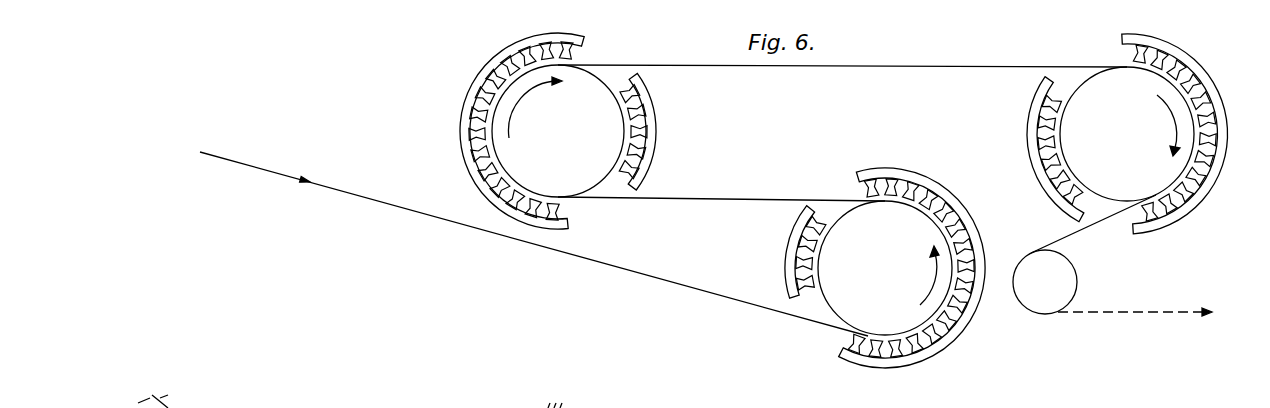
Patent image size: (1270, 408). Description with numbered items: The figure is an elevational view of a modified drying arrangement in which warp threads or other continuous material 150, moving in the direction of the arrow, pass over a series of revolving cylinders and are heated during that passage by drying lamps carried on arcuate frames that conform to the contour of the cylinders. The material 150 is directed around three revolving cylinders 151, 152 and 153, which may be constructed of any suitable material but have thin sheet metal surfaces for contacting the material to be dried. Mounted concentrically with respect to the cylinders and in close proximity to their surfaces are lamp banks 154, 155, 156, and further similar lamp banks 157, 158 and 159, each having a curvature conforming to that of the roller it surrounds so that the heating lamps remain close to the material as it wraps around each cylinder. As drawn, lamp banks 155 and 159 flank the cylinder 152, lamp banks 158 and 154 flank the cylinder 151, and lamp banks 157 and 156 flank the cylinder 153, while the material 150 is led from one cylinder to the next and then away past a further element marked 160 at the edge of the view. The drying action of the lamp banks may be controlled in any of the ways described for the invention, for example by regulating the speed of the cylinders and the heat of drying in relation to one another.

The warp threads or other continuous material 150 is at (428, 215).
The cylinder 151 is at (843, 298).
The cylinder 152 is at (585, 82).
The cylinder 153 is at (1100, 82).
The lamp bank 154 is at (957, 332).
The lamp bank 155 is at (462, 111).
The lamp bank 156 is at (1205, 72).
The guard shield 157 is at (1028, 133).
The guard shield 158 is at (790, 250).
The guard shield 159 is at (659, 131).
The reference numeral 160 is at (532, 398).